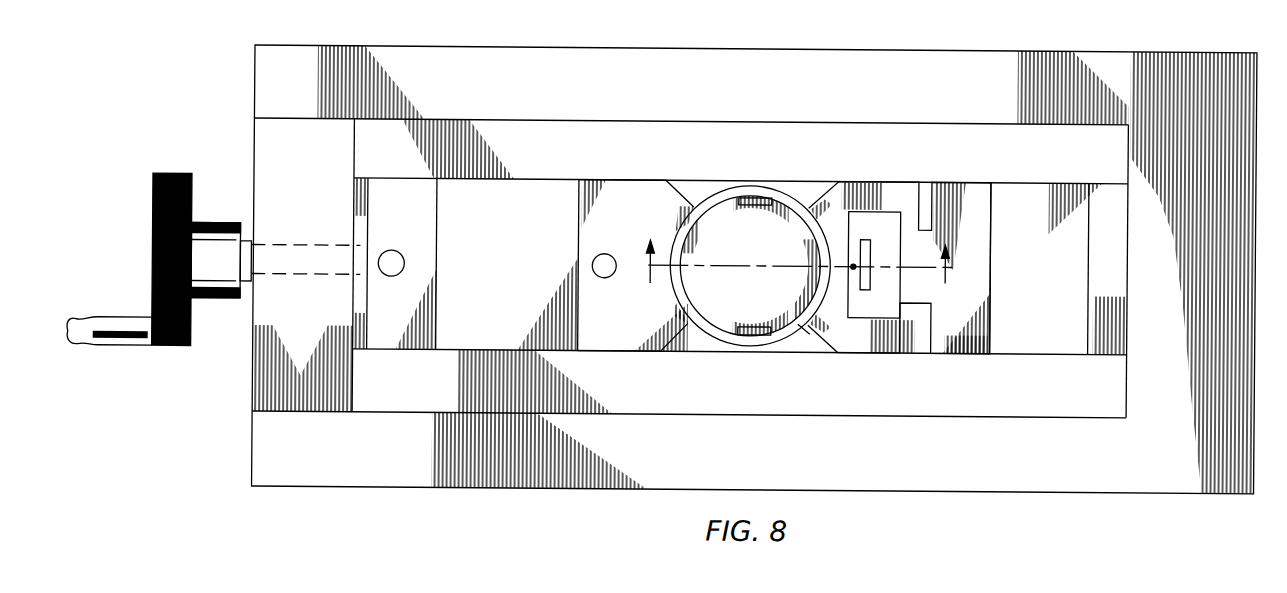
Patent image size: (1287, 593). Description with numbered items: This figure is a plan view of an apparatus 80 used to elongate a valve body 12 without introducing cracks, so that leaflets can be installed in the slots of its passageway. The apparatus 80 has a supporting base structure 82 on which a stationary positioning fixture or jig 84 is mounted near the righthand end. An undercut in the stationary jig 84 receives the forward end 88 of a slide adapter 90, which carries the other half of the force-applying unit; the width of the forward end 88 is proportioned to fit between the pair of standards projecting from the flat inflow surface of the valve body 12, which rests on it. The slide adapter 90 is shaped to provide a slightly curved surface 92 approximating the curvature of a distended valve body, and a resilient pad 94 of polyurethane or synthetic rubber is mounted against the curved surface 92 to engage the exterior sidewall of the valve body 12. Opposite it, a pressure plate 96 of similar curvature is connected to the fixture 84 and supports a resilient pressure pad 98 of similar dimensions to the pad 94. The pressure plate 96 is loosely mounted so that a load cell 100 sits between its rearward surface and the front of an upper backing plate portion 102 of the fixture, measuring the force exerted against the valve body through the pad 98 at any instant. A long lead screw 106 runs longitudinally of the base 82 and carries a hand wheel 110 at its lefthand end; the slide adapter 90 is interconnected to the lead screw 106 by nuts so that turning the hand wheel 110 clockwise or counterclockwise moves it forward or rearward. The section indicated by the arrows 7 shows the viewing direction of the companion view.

The section line 7- 7 is at (795, 266).
The valve body 12 is at (741, 193).
The apparatus 80 is at (1078, 46).
The supporting base structure 82 is at (1138, 459).
The stationary positioning fixture or jig 84 is at (1028, 206).
The forward end of slide adapter 88 is at (742, 257).
The slide adapter 90 is at (505, 205).
The curved surface 92 is at (705, 196).
The resilient pad 94 is at (697, 320).
The pressure plate 96 is at (827, 194).
The resilient pressure pad 98 is at (826, 322).
The load cell 100 is at (867, 210).
The upper backing plate portion 102 is at (908, 318).
The lead screw 106 is at (318, 250).
The hand wheel 110 is at (155, 223).